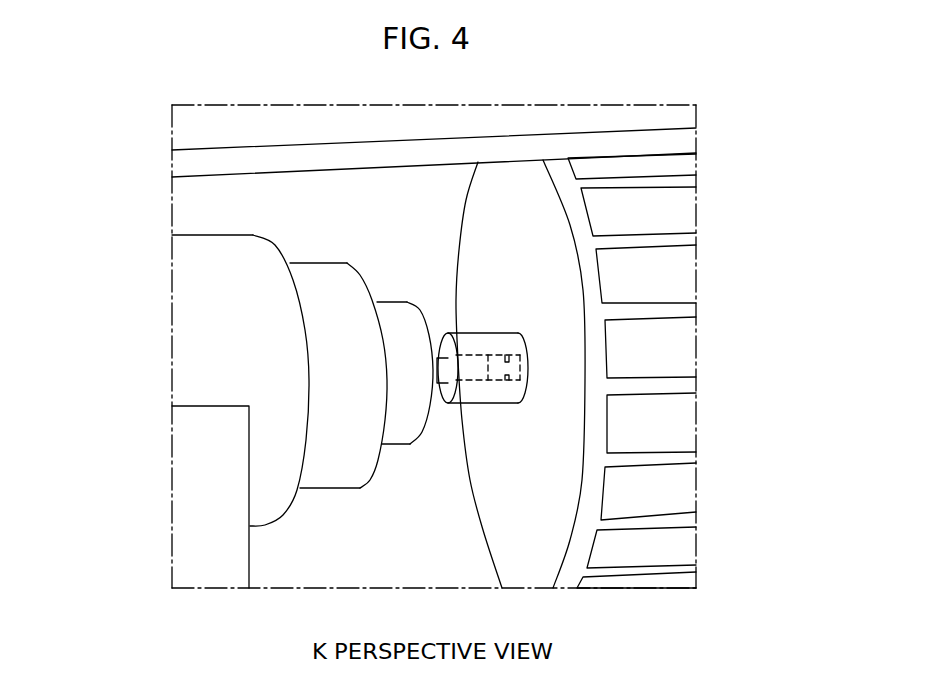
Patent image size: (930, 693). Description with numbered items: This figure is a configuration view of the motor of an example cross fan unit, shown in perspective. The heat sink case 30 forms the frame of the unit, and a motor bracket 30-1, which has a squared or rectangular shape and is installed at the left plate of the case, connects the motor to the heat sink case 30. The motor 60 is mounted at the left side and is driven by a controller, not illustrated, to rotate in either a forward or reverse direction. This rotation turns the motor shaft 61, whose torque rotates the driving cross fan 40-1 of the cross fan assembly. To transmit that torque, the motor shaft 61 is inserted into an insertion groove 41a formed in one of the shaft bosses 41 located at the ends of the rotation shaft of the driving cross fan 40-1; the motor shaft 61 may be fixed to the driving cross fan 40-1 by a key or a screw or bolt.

The heat sink case 30 is at (210, 132).
The motor bracket 30-1 is at (210, 497).
The driving cross fan 40-1 is at (660, 377).
The shaft boss 41 is at (483, 333).
The insertion groove 41a is at (470, 383).
The motor 60 is at (210, 270).
The motor shaft 61 is at (443, 370).